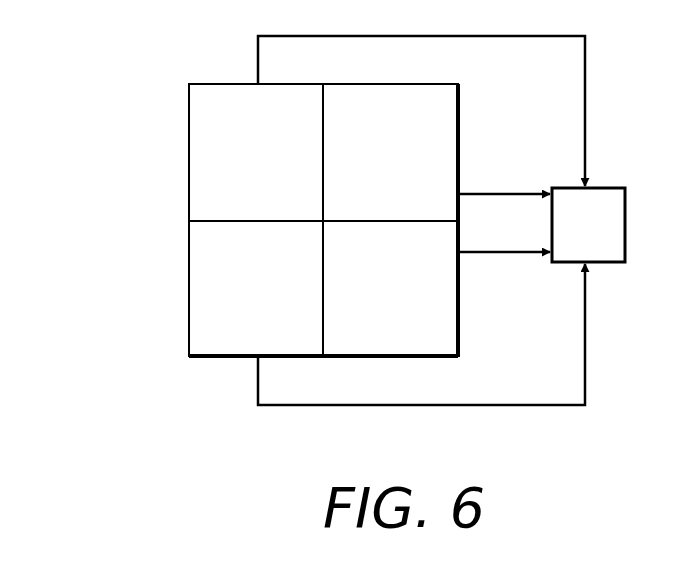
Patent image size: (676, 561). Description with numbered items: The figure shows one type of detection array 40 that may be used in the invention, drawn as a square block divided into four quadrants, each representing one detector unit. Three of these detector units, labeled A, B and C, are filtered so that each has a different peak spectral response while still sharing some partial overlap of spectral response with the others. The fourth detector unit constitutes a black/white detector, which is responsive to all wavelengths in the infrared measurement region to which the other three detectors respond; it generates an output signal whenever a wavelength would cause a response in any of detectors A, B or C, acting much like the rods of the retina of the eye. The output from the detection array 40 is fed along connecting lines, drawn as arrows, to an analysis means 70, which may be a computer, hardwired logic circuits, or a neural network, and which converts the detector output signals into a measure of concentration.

The detection array 40 is at (246, 220).
The analysis means 70 is at (588, 225).
The test pattern quadrant A is at (256, 152).
The test pattern quadrant B is at (390, 152).
The test pattern quadrant C is at (256, 288).